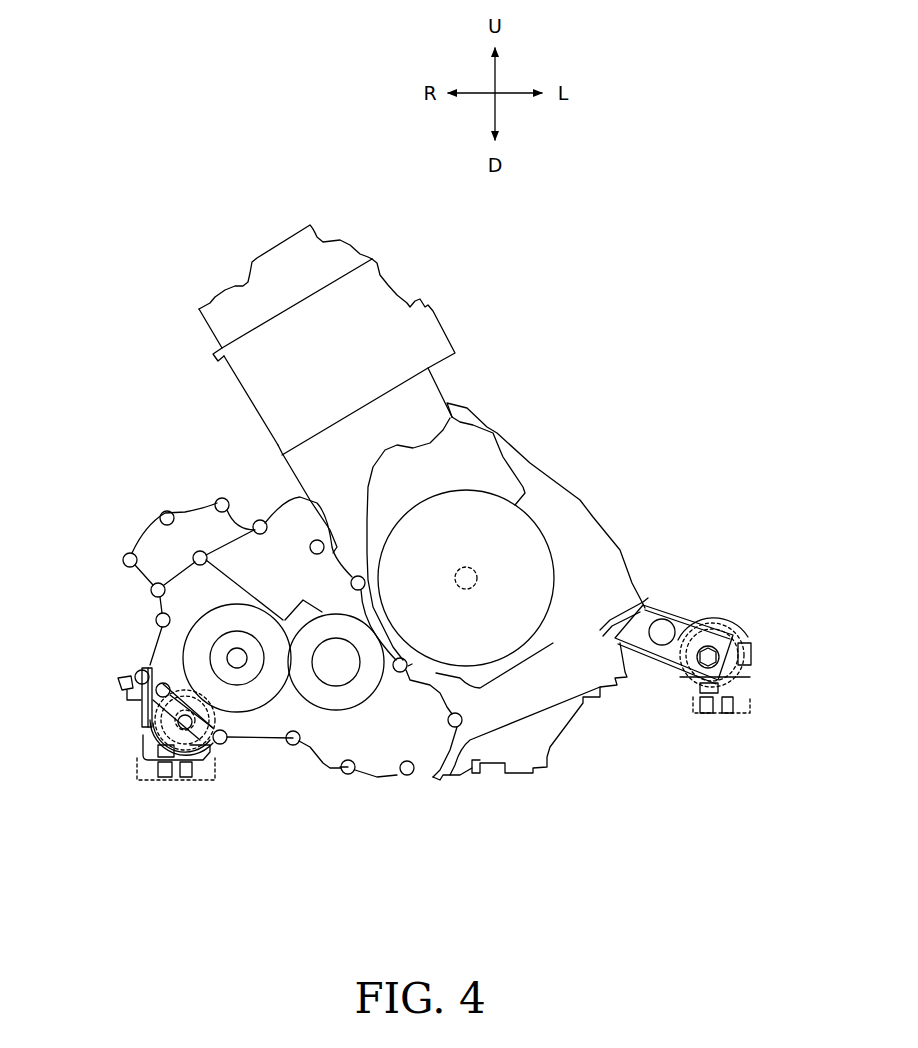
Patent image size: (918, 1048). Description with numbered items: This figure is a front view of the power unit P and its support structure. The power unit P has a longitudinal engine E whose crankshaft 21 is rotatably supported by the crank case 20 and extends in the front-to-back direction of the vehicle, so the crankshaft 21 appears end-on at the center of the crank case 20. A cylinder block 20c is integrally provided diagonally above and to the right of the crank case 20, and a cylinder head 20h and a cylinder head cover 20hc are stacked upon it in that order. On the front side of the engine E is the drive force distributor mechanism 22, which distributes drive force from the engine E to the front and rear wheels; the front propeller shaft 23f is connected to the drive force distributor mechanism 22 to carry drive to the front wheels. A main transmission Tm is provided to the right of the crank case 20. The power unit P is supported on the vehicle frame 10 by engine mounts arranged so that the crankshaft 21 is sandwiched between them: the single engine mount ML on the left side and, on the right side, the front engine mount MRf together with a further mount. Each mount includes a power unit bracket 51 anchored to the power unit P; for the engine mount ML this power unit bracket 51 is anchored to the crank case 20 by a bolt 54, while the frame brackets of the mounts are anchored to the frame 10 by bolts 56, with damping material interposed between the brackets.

The vehicle frame 10 is at (750, 710).
The crank case 20 is at (585, 540).
The cylinder block 20c is at (437, 387).
The cylinder head 20h is at (418, 317).
The cylinder head cover 20hc is at (325, 240).
The crankshaft 21 is at (467, 575).
The drive force distributor mechanism 22 is at (167, 645).
The front propeller shaft 23f is at (240, 663).
The power unit bracket 51 is at (705, 612).
The bolt 54 is at (707, 657).
The bolt 56 is at (707, 707).
The engine E is at (372, 364).
The power unit P is at (372, 536).
The engine mount ML is at (742, 602).
The engine mount MRf is at (127, 732).
The main transmission Tm is at (373, 733).